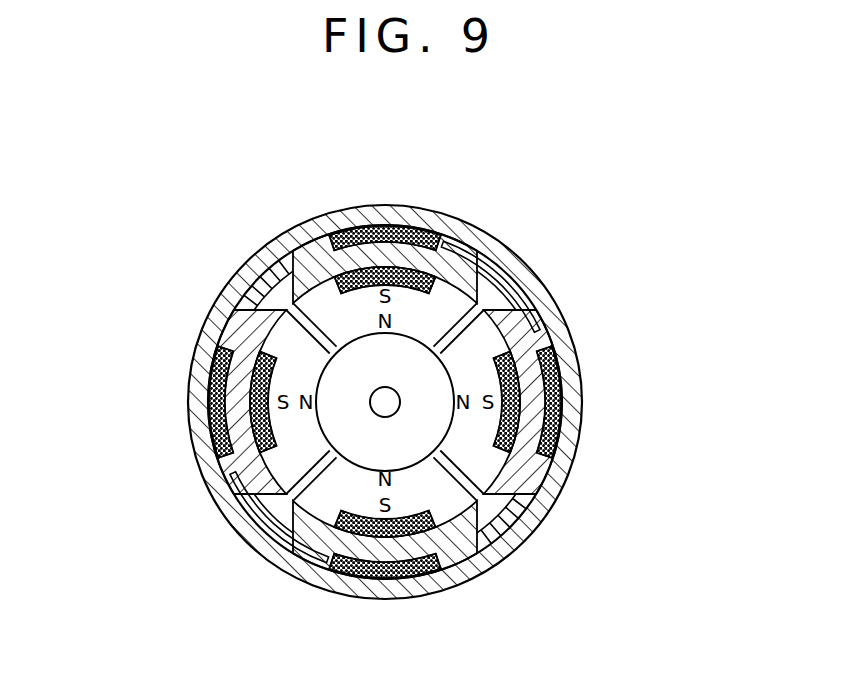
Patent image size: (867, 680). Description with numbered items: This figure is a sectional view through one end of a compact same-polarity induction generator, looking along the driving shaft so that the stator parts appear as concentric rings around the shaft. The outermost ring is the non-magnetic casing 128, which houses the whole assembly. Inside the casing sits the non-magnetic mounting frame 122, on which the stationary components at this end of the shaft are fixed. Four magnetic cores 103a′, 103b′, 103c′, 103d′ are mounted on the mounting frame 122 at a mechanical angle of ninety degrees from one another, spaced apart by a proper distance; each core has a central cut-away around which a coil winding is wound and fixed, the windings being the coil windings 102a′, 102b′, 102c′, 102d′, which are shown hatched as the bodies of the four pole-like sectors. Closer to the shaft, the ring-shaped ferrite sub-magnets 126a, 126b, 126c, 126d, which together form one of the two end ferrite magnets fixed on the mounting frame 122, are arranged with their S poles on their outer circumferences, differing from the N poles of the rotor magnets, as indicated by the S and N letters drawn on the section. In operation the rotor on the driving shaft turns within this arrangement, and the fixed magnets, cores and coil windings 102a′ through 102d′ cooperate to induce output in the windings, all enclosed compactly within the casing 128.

The non-magnetic casing 128 is at (337, 218).
The mounting frame 122 is at (254, 258).
The coil winding 102a′ is at (408, 211).
The coil winding 102b′ is at (572, 333).
The coil winding 102c′ is at (397, 578).
The coil winding 102d′ is at (195, 437).
The magnetic core 103a′ is at (465, 240).
The magnetic core 103b′ is at (545, 421).
The magnetic core 103c′ is at (328, 560).
The magnetic core 103d′ is at (237, 333).
The ferrite sub-magnet 126a is at (445, 302).
The ferrite sub-magnet 126b is at (485, 466).
The ferrite sub-magnet 126c is at (330, 535).
The ferrite sub-magnet 126d is at (290, 372).